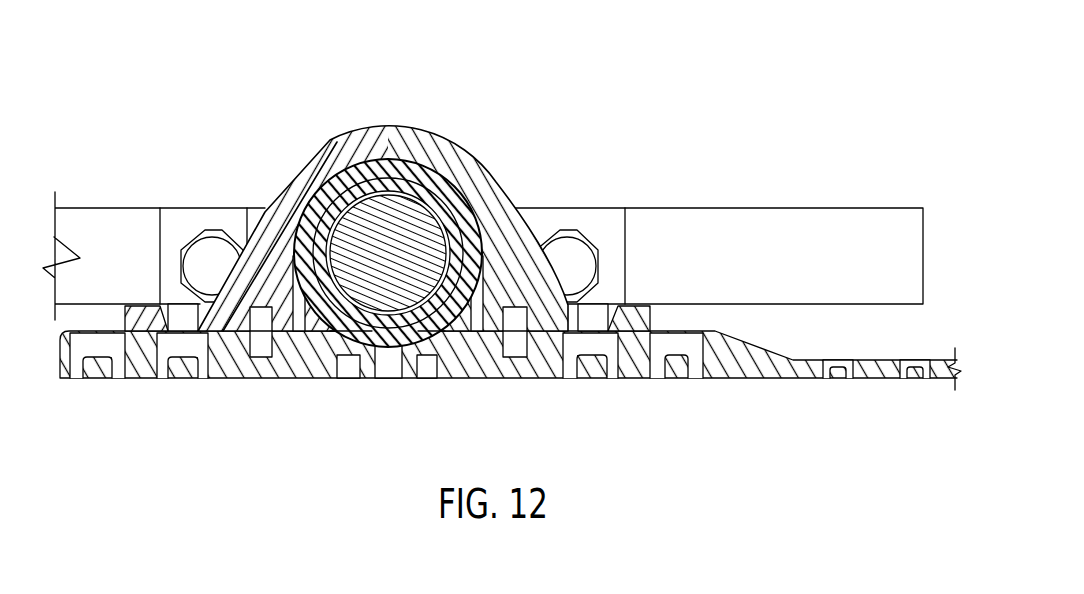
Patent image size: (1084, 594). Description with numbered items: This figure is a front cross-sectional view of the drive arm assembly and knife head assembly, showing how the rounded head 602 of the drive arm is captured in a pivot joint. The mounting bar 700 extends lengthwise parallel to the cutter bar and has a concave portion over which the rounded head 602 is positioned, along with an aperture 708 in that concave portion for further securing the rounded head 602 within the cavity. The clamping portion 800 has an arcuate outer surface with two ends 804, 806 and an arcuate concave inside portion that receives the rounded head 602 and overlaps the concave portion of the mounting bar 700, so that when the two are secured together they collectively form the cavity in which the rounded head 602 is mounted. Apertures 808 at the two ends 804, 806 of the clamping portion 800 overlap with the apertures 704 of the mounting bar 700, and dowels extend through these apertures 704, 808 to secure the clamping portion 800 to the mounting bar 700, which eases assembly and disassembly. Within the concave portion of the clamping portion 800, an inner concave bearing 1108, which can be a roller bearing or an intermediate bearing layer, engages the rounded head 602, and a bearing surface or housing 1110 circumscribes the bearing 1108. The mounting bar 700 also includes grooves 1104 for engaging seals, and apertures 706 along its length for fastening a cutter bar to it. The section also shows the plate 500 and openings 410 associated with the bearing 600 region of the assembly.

The opening in mounting plate 410 is at (244, 222).
The mounting plate 500 is at (810, 208).
The bearing 600 is at (432, 228).
The rounded head 602 is at (418, 236).
The mounting bar 700 is at (770, 400).
The apertures 704 is at (185, 372).
The apertures 706 is at (845, 372).
The aperture 708 is at (387, 363).
The clamping portion 800 is at (262, 143).
The end 804 is at (642, 294).
The end 806 is at (133, 297).
The apertures 808 is at (218, 252).
The grooves 1104 is at (260, 342).
The inner concave bearing 1108 is at (350, 175).
The bearing surface or housing 1110 is at (383, 172).